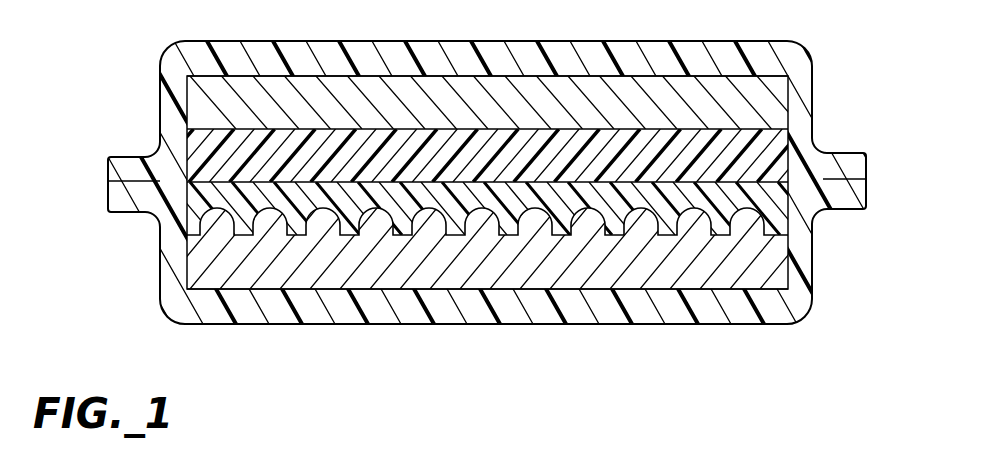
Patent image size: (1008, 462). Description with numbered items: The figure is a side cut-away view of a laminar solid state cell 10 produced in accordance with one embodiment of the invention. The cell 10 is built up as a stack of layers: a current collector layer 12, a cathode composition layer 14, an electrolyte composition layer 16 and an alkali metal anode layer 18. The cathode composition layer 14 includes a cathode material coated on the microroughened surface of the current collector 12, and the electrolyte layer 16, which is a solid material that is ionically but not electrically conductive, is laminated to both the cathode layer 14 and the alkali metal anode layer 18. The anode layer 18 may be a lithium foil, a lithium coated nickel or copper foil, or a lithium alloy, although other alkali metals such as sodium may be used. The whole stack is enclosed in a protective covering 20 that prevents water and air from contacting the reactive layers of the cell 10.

The laminar solid state cell 10 is at (814, 48).
The current collector layer 12 is at (203, 262).
The cathode composition layer 14 is at (207, 203).
The electrolyte composition layer 16 is at (210, 157).
The alkali metal anode layer 18 is at (200, 104).
The protective covering 20 is at (333, 324).